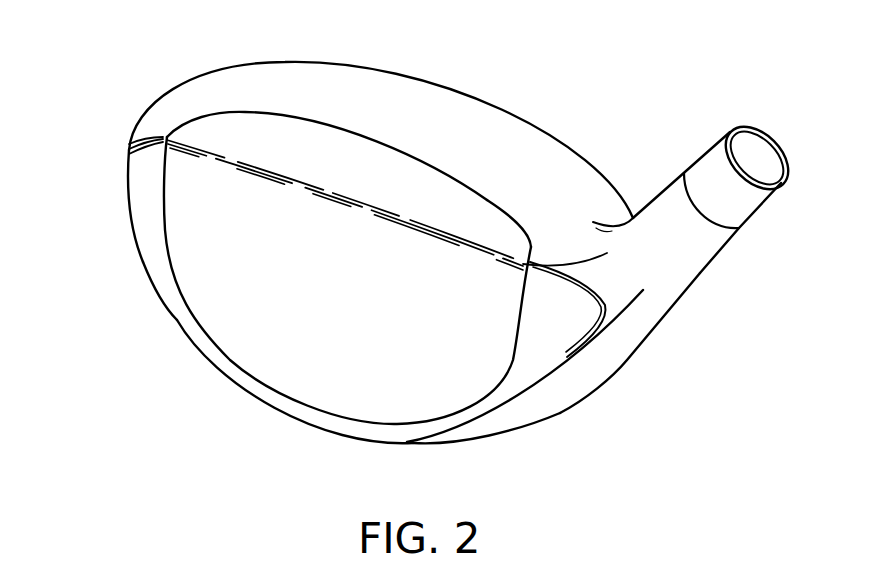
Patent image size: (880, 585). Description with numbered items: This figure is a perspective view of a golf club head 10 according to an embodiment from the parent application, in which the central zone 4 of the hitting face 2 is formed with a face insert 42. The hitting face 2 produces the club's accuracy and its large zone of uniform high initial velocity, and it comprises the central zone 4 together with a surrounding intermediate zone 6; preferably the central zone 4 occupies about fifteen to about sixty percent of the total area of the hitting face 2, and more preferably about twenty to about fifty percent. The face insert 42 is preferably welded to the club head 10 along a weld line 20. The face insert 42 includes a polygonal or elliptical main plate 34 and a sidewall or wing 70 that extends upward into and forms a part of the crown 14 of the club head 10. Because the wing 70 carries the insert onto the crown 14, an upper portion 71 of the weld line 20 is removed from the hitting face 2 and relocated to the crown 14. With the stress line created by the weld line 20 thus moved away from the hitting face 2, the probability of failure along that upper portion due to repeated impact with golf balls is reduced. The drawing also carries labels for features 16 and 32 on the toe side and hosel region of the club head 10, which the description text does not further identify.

The club head 10 is at (656, 89).
The crown 14 is at (278, 77).
The toe 16 is at (128, 174).
The intermediate zone 6 is at (157, 213).
The weld line 20 is at (167, 262).
The main plate 34 is at (233, 343).
The face insert 42 is at (365, 392).
The hitting face 2 is at (612, 358).
The hosel 32 is at (653, 333).
The central zone 4 is at (346, 311).
The upper portion of weld line 71 is at (380, 140).
The sidewall or wing 70 is at (487, 216).